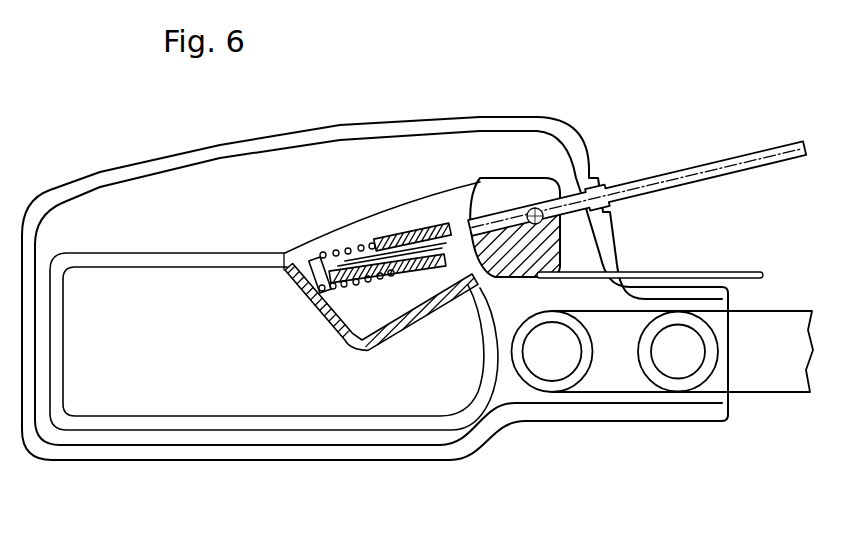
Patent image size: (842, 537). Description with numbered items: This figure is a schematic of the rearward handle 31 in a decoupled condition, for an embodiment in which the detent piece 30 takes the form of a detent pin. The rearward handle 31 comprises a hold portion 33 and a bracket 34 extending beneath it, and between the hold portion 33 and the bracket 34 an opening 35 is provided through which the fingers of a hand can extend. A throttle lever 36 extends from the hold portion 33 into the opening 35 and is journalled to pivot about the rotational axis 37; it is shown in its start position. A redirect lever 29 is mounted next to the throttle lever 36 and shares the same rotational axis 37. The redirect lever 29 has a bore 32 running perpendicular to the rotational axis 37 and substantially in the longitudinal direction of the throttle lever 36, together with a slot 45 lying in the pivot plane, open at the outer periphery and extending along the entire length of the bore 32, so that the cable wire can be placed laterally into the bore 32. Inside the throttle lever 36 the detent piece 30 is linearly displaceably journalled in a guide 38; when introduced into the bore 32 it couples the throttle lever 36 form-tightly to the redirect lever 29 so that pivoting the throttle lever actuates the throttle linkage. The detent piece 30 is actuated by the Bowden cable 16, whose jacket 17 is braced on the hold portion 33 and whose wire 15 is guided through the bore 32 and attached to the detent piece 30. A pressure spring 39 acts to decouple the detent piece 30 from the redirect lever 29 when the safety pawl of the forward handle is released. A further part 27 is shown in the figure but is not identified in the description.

The wire 15 is at (458, 205).
The Bowden cable 16 is at (698, 165).
The jacket 17 is at (653, 175).
The plate 27 is at (698, 271).
The redirect lever 29 is at (485, 176).
The detent piece 30 is at (356, 246).
The rearward handle 31 is at (129, 160).
The bore 32 is at (515, 213).
The hold portion 33 is at (205, 155).
The bracket 34 is at (340, 461).
The opening 35 is at (193, 361).
The throttle lever 36 is at (395, 334).
The rotational axis 37 is at (553, 190).
The guide 38 is at (407, 236).
The pressure spring 39 is at (323, 256).
The slot 45 is at (494, 196).